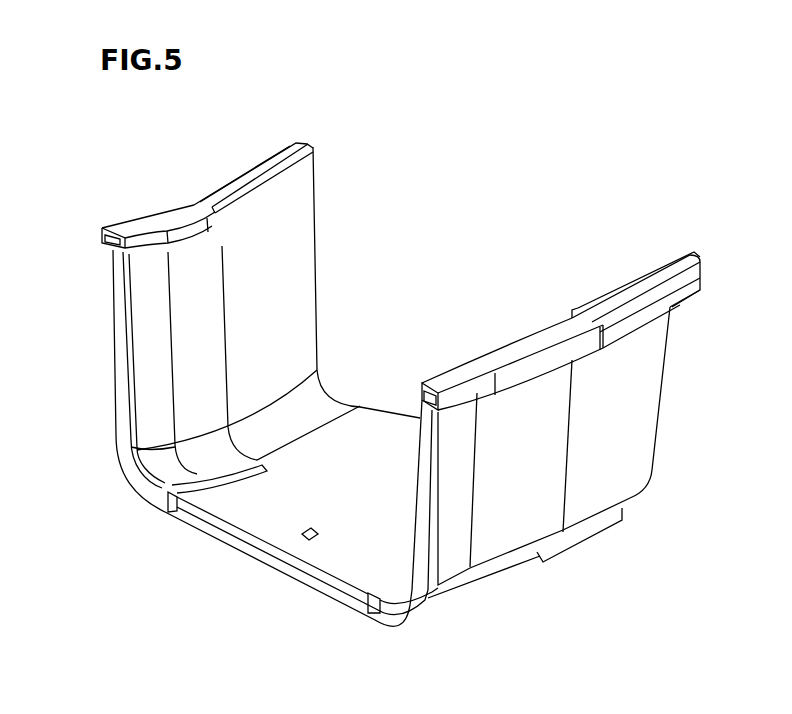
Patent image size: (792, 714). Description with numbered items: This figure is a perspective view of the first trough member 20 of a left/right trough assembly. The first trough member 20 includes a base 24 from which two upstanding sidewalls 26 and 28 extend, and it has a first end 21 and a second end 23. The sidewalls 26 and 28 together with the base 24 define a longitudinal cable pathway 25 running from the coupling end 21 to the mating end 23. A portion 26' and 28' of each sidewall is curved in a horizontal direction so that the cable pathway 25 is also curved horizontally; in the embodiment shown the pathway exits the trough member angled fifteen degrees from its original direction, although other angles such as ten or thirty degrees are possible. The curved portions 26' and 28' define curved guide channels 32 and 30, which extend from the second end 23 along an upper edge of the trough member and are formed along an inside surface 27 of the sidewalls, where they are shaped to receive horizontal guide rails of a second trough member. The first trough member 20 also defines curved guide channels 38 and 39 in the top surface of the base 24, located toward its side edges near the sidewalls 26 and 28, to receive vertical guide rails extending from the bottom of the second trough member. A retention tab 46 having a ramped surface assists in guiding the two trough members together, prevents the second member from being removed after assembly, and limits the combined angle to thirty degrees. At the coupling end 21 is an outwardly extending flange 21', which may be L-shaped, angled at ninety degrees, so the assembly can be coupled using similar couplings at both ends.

The first trough member 20 is at (438, 187).
The first end 21 is at (246, 195).
The flange 21' is at (597, 315).
The second end 23 is at (122, 315).
The base 24 is at (281, 510).
The cable pathway 25 is at (328, 520).
The sidewall 26 is at (541, 448).
The curved portion of sidewall 26' is at (491, 534).
The inside surface 27 is at (178, 286).
The sidewall 28 is at (321, 303).
The curved portion of sidewall 28' is at (227, 363).
The guide channel 30 is at (116, 242).
The guide channel 32 is at (425, 398).
The guide channel 38 is at (370, 604).
The guide channel 39 is at (168, 503).
The retention tab 46 is at (316, 540).